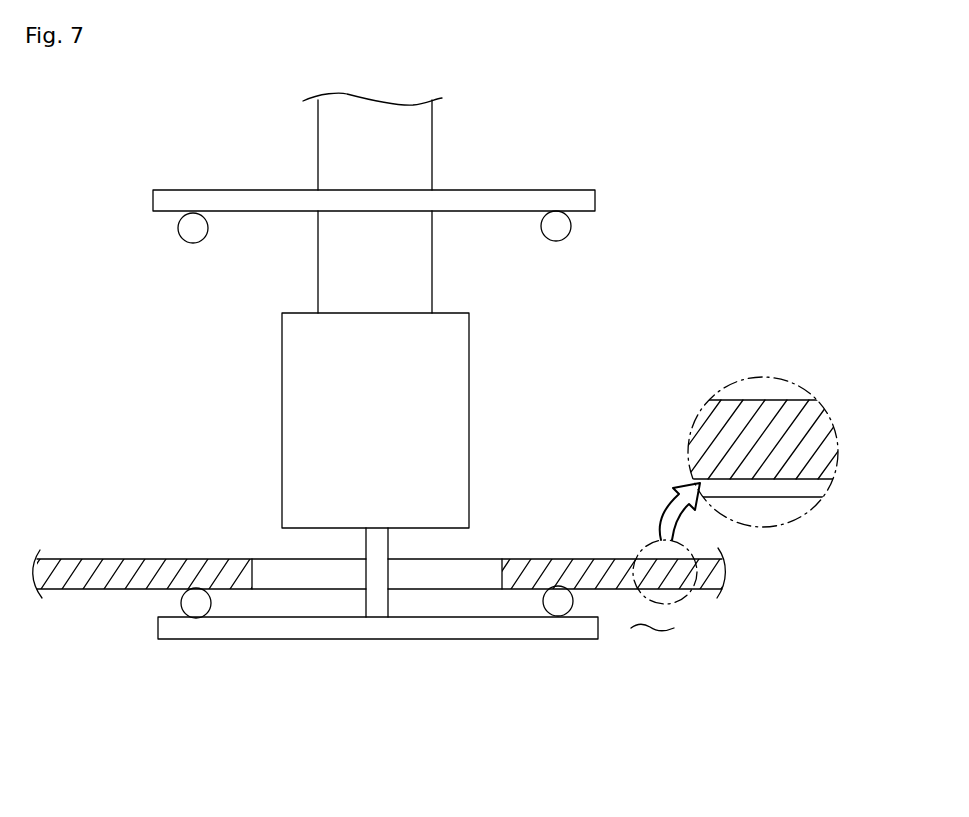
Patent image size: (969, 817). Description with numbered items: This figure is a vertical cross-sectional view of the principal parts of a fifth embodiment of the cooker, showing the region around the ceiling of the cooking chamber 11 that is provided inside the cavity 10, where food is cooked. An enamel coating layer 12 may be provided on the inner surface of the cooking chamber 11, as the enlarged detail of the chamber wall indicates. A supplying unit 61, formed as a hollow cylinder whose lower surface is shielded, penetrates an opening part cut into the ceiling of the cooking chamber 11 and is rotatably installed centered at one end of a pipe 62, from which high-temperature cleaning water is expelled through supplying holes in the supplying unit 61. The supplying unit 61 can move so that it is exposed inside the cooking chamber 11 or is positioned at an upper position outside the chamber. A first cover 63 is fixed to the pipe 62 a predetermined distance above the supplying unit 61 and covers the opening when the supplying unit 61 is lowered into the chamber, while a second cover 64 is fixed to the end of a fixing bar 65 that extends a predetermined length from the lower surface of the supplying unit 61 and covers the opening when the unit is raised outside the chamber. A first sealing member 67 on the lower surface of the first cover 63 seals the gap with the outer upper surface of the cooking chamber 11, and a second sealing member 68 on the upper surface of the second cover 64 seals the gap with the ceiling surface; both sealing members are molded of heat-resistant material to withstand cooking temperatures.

The cavity 10 is at (762, 415).
The cooking chamber 11 is at (650, 628).
The enamel coating layer 12 is at (775, 488).
The supplying unit 61 is at (282, 395).
The pipe 62 is at (318, 142).
The first cover 63 is at (558, 189).
The second cover 64 is at (540, 640).
The fixing bar 65 is at (388, 604).
The first sealing member 67 is at (572, 226).
The second sealing member 68 is at (180, 604).